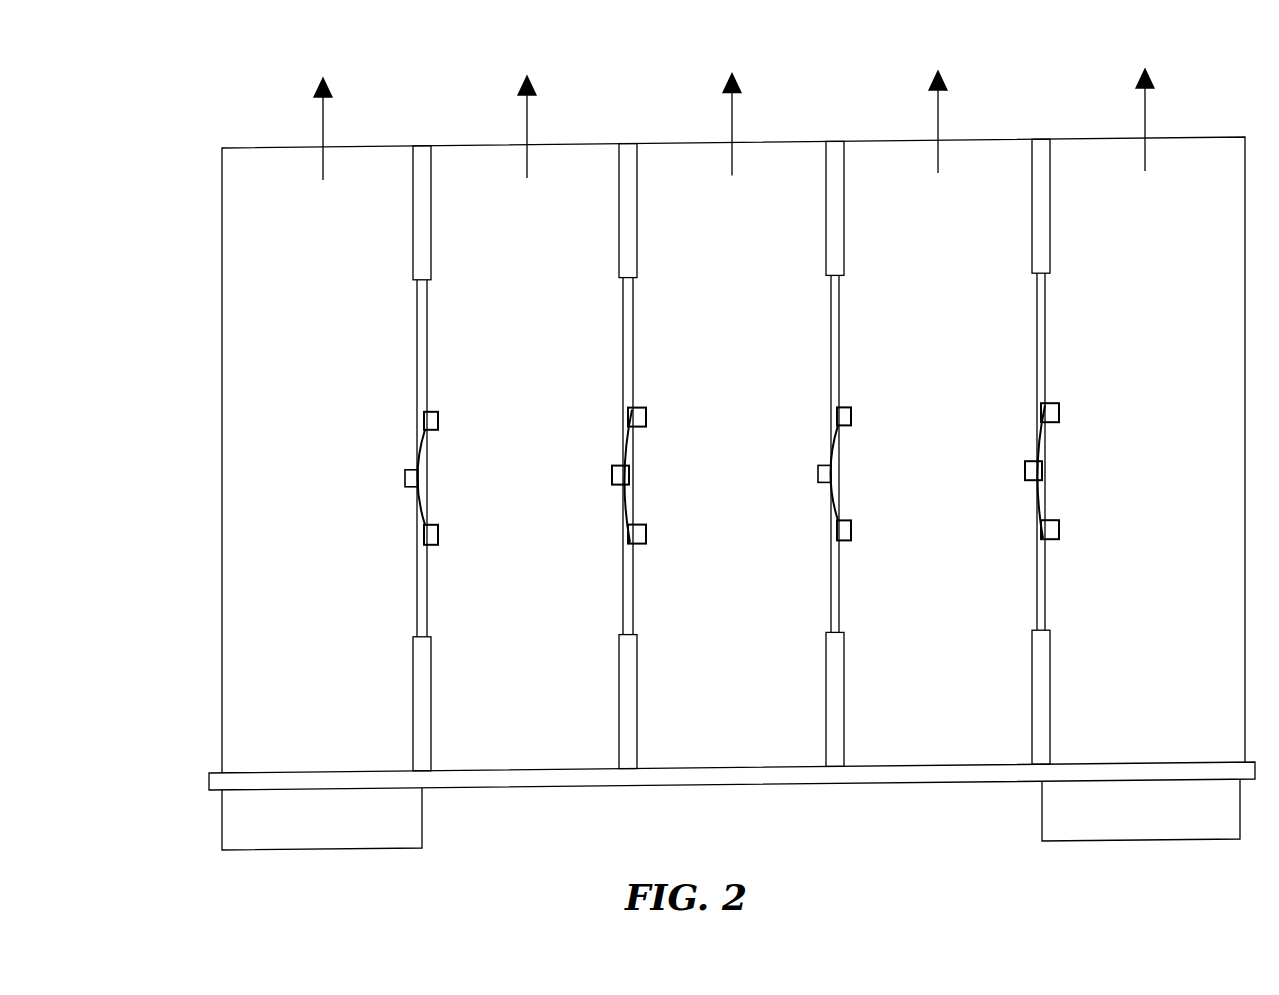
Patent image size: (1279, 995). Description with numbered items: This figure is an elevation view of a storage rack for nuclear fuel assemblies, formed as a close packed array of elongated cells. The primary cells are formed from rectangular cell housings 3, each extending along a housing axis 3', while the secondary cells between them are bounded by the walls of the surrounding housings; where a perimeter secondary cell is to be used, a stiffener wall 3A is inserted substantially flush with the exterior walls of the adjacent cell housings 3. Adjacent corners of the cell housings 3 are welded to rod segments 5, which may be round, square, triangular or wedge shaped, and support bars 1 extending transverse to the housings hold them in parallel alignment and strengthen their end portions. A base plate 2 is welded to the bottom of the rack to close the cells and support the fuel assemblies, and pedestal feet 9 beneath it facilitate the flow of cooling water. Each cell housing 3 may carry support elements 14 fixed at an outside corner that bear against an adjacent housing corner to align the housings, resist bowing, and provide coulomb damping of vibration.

The support bar 1 is at (223, 165).
The base plate 2 is at (768, 773).
The cell housing 3 is at (784, 716).
The stiffener wall 3A is at (604, 729).
The housing axis 3' is at (776, 118).
The rod segment 5 is at (422, 212).
The pedestal foot 9 is at (390, 812).
The support element 14 is at (425, 507).